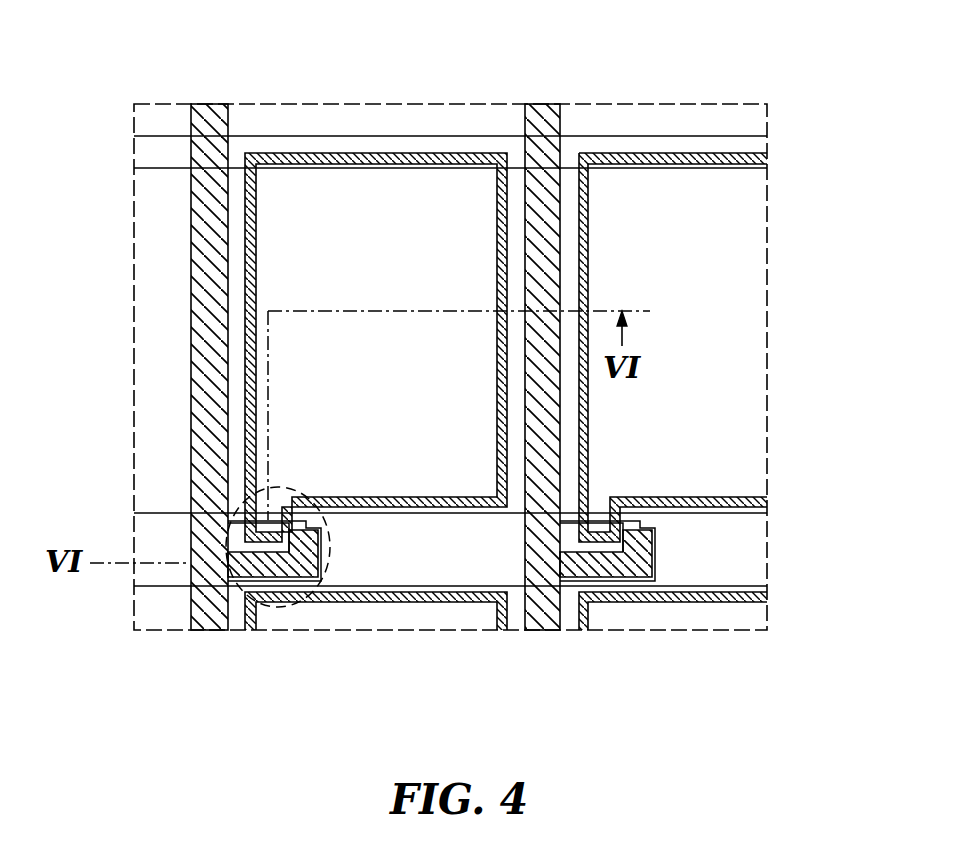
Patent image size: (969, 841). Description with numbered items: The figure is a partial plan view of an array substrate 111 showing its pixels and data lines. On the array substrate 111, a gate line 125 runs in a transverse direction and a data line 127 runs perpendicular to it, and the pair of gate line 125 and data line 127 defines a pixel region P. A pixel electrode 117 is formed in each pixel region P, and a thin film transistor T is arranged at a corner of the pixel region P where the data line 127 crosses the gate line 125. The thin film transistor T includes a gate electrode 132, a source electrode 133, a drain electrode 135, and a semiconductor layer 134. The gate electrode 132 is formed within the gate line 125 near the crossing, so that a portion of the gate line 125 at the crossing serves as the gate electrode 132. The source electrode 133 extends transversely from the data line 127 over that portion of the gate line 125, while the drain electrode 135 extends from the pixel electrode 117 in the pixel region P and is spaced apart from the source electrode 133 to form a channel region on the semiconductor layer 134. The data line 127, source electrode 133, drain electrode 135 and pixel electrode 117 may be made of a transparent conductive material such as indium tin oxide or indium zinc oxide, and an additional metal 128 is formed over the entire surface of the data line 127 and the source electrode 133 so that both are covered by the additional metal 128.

The array substrate 111 is at (777, 294).
The pixel electrode 117 is at (370, 108).
The gate line 125 is at (750, 538).
The data line 127 is at (223, 105).
The additional metal 128 is at (547, 105).
The pixel region P is at (442, 198).
The drain electrode 135 is at (255, 512).
The source electrode 133 is at (300, 572).
The semiconductor layer 134 is at (300, 578).
The gate electrode 132 is at (240, 572).
The thin film transistor T is at (240, 542).